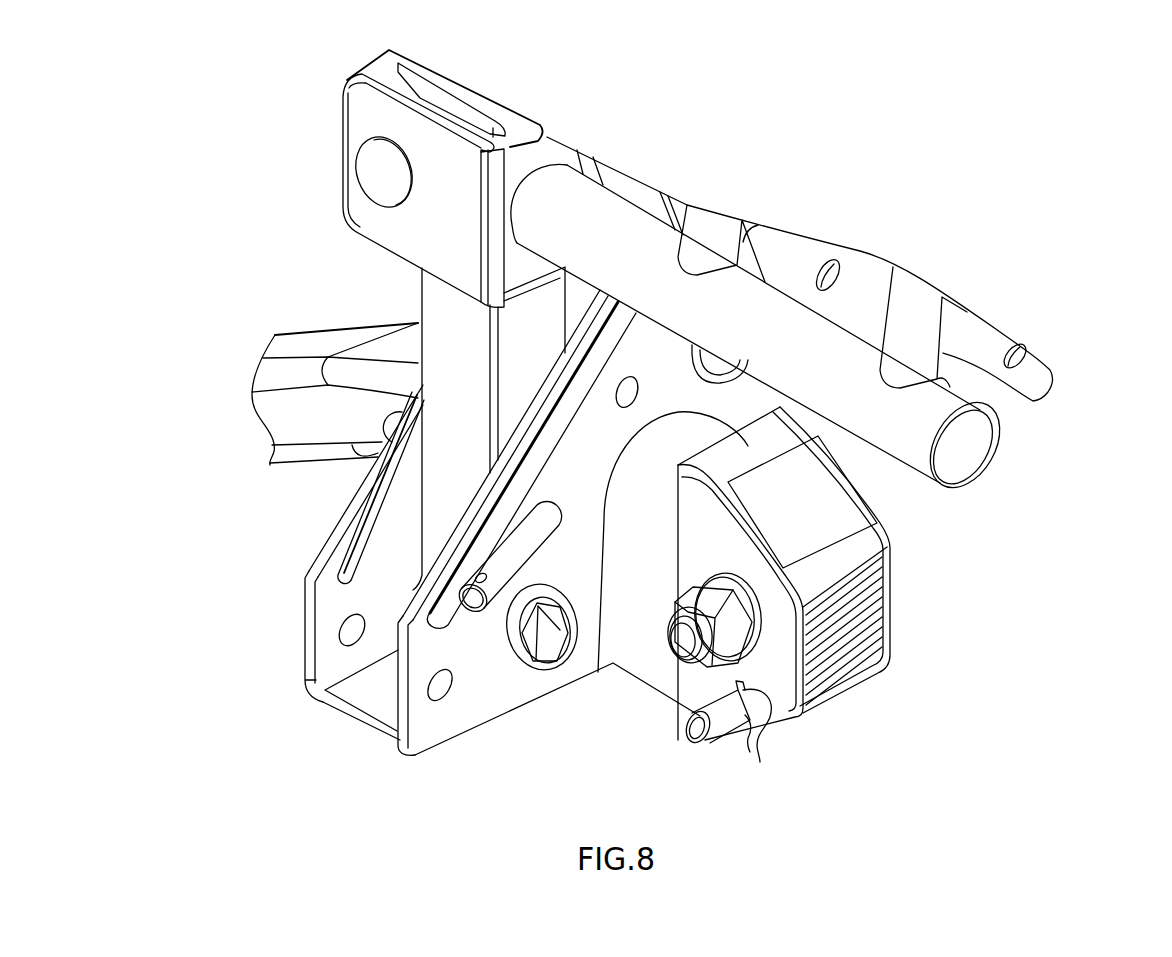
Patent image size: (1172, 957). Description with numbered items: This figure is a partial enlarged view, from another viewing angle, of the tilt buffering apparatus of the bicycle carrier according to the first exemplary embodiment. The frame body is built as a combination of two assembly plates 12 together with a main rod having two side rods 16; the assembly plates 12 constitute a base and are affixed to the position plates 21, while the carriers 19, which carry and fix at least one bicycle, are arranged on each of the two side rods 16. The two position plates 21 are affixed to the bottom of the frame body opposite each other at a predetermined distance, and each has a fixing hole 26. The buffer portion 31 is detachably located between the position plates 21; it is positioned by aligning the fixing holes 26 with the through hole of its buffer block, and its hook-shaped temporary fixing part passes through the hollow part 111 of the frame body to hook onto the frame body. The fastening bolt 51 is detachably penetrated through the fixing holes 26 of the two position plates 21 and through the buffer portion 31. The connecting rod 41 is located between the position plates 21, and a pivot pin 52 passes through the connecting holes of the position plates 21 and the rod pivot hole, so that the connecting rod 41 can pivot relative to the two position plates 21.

The assembly plate 12 is at (305, 637).
The side rod 16 is at (410, 292).
The carrier 19 is at (1035, 401).
The position plate 21 is at (787, 725).
The fixing hole 26 is at (762, 725).
The buffer portion 31 is at (872, 603).
The connecting rod 41 is at (297, 462).
The fastening bolt 51 is at (720, 723).
The pivot pin 52 is at (683, 647).
The hollow part 111 is at (598, 670).